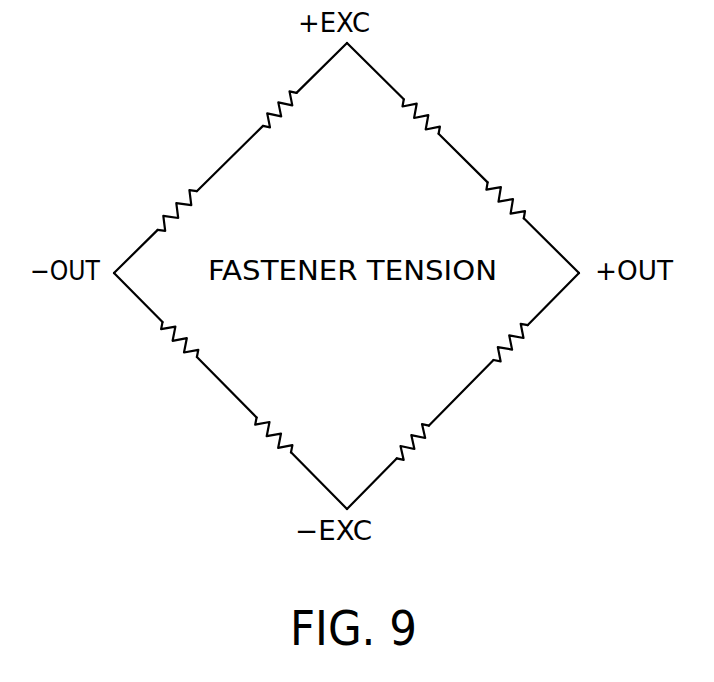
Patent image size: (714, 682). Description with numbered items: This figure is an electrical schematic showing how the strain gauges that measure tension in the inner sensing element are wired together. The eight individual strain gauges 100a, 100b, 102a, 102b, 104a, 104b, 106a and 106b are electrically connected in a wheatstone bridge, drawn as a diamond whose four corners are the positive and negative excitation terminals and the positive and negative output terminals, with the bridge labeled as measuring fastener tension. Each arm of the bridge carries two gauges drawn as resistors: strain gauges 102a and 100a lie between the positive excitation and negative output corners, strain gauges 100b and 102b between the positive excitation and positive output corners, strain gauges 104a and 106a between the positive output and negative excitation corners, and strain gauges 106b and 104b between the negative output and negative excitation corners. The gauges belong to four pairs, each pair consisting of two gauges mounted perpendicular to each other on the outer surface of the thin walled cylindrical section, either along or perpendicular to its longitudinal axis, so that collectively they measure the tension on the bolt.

The strain gauge 100a is at (164, 208).
The strain gauge 100b is at (430, 110).
The strain gauge 102a is at (268, 108).
The strain gauge 102b is at (515, 196).
The strain gauge 104a is at (513, 350).
The strain gauge 104b is at (263, 440).
The strain gauge 106a is at (425, 450).
The strain gauge 106b is at (172, 348).